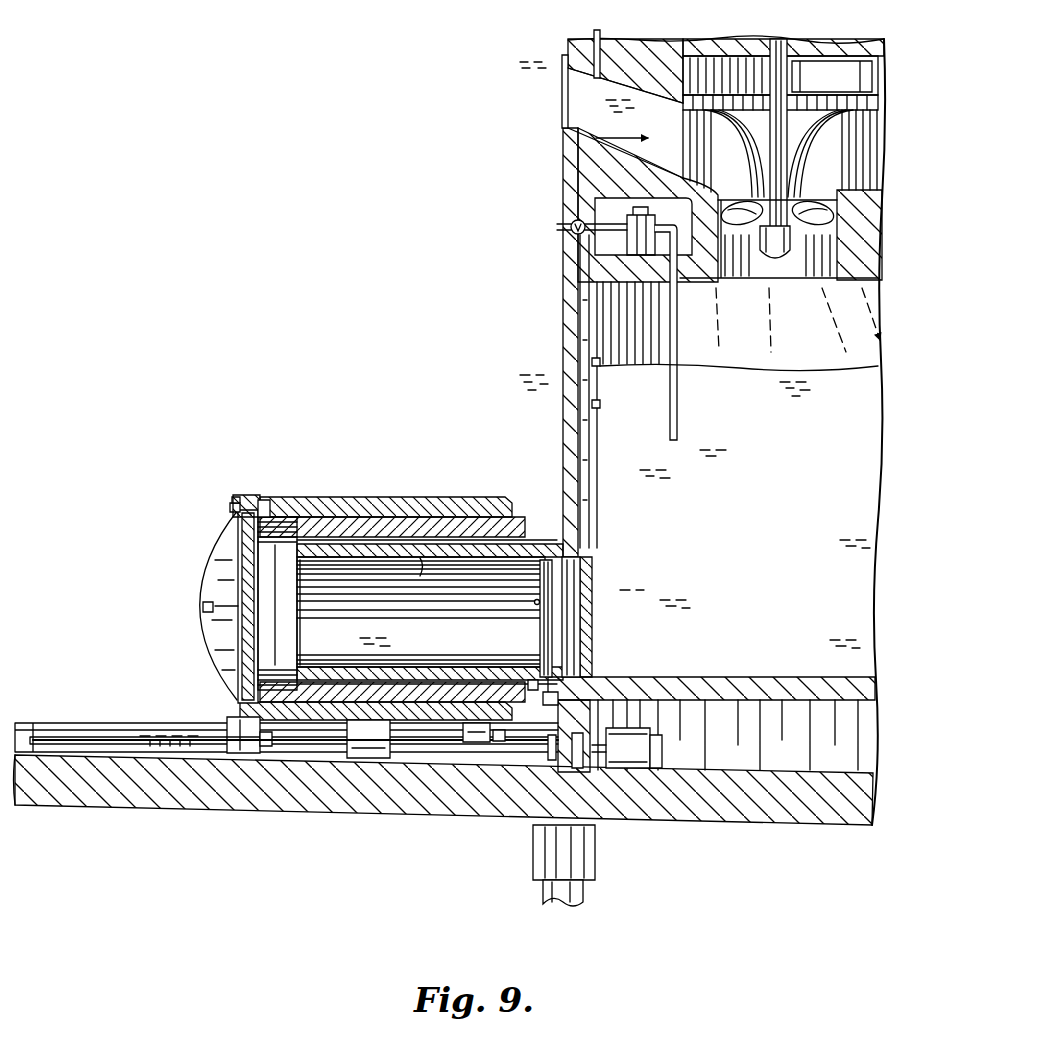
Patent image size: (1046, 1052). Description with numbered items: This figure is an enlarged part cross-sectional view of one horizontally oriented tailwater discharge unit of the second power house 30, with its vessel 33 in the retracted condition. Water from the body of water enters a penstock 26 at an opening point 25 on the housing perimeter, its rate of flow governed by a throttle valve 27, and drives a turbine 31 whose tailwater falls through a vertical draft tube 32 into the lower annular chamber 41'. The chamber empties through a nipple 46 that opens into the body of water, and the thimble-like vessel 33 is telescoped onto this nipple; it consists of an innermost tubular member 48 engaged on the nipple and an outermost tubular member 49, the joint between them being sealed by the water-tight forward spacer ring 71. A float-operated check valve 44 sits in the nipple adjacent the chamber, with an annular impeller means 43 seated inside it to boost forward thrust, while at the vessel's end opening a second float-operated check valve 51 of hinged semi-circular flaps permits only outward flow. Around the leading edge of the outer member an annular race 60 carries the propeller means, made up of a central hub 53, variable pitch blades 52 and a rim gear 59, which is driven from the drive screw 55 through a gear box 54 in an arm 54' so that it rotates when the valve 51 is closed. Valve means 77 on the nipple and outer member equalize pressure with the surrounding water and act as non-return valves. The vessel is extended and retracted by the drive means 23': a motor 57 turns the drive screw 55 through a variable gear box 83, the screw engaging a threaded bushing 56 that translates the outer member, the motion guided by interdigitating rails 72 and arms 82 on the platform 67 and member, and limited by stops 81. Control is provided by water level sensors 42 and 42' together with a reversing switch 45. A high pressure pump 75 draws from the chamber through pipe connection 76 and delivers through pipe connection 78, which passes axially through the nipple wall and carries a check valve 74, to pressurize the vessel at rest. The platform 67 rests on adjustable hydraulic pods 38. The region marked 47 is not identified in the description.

The drive means 23' is at (295, 801).
The penstock opening points 25 is at (560, 108).
The penstock 26 is at (575, 86).
The throttle valve 27 is at (592, 30).
The second power house 30 is at (590, 140).
The turbine 31 is at (800, 266).
The vertical draft tube 32 is at (764, 272).
The vessel 33 is at (384, 583).
The adjustable hydraulic pod 38 is at (587, 886).
The lower annular chamber 41' is at (736, 488).
The water level sensor 42 is at (616, 385).
The water level sensor 42' is at (617, 420).
The annular impeller means 43 is at (576, 648).
The check valve 44 is at (552, 596).
The reversing switch 45 is at (550, 705).
The nipple 46 is at (422, 576).
The drum interior 47 is at (448, 645).
The innermost tubular member 48 is at (330, 525).
The outermost tubular member 49 is at (460, 503).
The check valve 51 is at (248, 545).
The variable pitch propeller blades 52 is at (220, 560).
The central hub 53 is at (202, 607).
The gear box 54 is at (231, 784).
The arm 54' is at (277, 792).
The drive screw 55 is at (100, 738).
The bushing 56 is at (368, 752).
The motor 57 is at (636, 742).
The rim gear 59 is at (230, 508).
The annular race 60 is at (236, 497).
The platform 67 is at (690, 805).
The spacer ring 71 is at (264, 500).
The rail 72 is at (178, 732).
The check valve 74 is at (571, 234).
The high pressure pump 75 is at (630, 213).
The pipe connection 76 is at (678, 332).
The valve means 77 is at (248, 494).
The pipe connection 78 is at (542, 548).
The stop 81 is at (497, 742).
The arm 82 is at (474, 744).
The variable gear box 83 is at (574, 760).